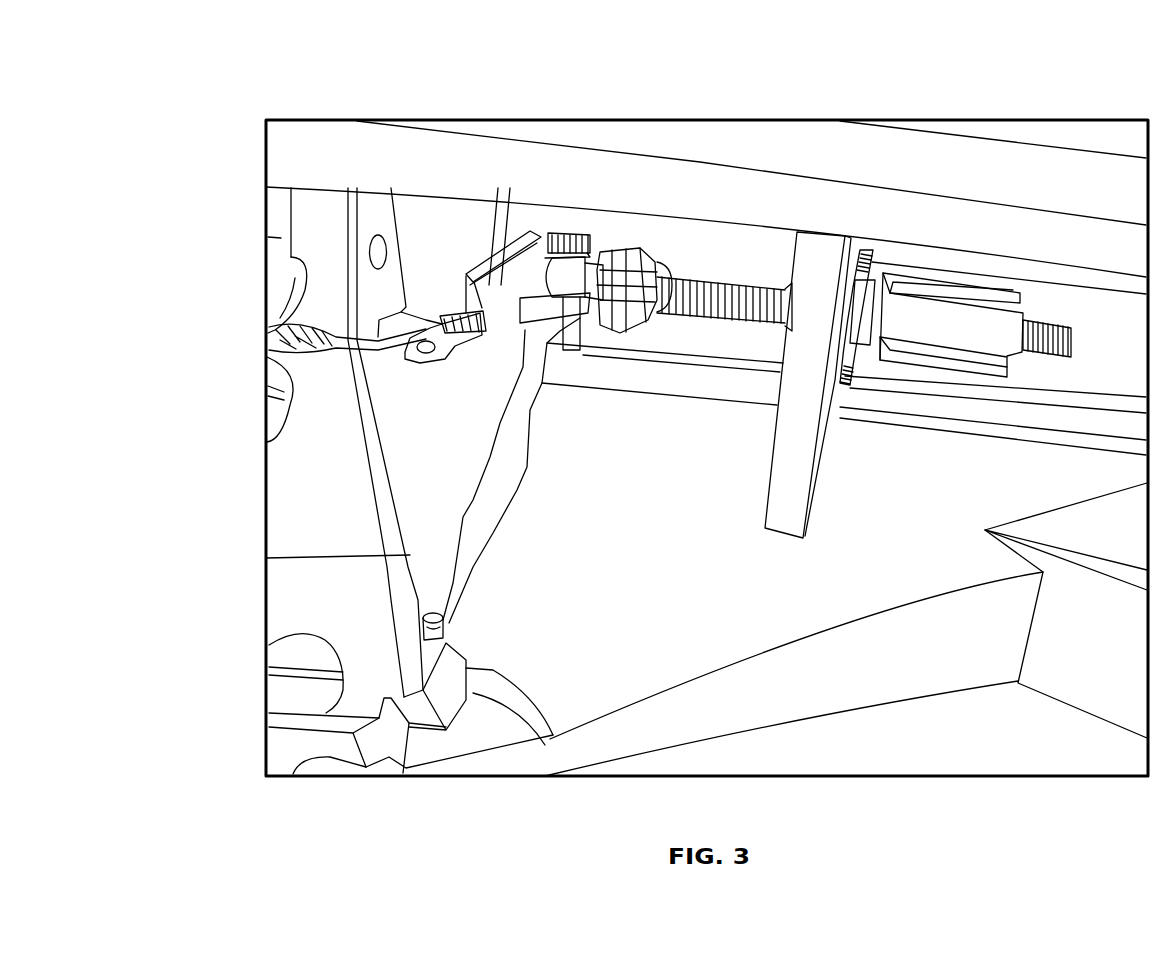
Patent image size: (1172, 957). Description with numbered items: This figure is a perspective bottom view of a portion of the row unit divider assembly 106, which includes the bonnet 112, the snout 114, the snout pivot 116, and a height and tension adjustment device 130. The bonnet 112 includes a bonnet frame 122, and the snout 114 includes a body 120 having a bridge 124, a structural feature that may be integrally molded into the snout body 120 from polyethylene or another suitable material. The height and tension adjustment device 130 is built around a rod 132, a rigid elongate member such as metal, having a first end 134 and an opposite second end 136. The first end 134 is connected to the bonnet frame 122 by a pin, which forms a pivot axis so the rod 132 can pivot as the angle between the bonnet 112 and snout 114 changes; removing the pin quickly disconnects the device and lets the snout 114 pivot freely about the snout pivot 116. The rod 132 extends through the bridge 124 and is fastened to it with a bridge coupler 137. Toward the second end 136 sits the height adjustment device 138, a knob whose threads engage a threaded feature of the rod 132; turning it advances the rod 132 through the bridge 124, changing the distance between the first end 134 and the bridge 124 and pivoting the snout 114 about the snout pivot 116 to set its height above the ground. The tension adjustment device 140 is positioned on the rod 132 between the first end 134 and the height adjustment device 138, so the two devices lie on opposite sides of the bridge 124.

The row unit divider assembly 106 is at (226, 162).
The bonnet 112 is at (276, 240).
The snout 114 is at (986, 108).
The snout pivot 116 is at (447, 627).
The body 120 is at (913, 155).
The bonnet frame 122 is at (447, 505).
The bridge 124 is at (822, 252).
The height and tension adjustment device 130 is at (657, 496).
The rod 132 is at (729, 281).
The first end 134 is at (578, 225).
The second end 136 is at (1064, 358).
The bridge coupler 137 is at (872, 252).
The height adjustment device 138 is at (981, 331).
The tension adjustment device 140 is at (635, 250).